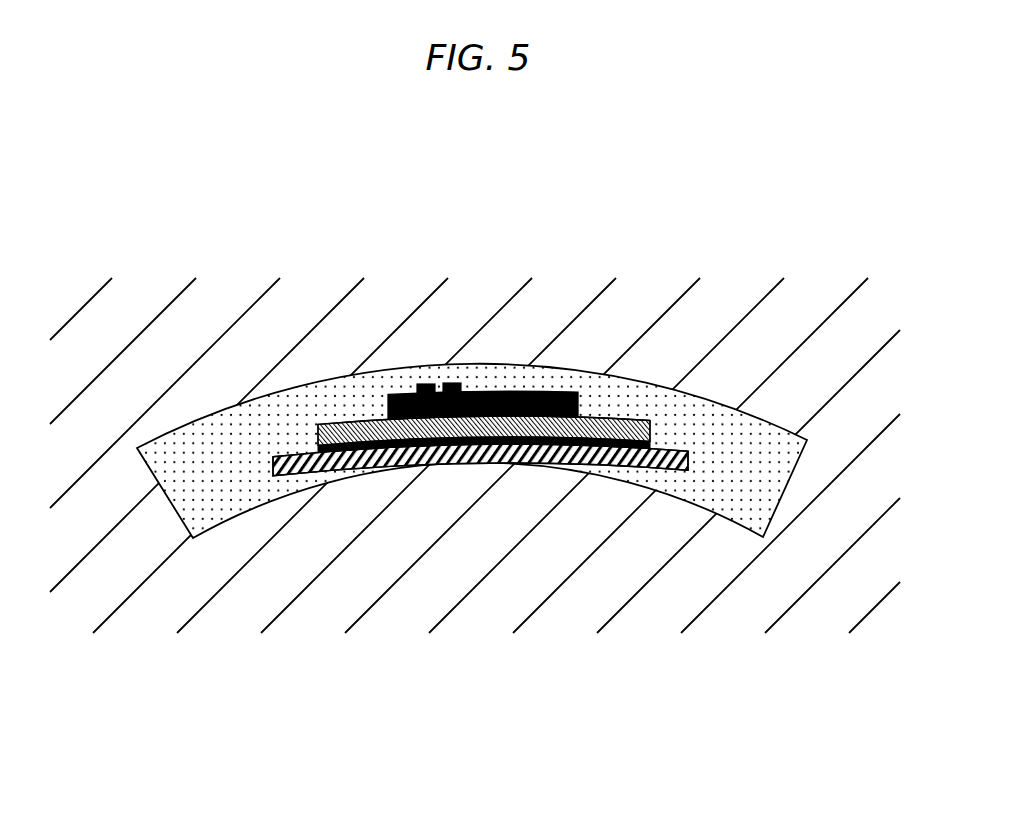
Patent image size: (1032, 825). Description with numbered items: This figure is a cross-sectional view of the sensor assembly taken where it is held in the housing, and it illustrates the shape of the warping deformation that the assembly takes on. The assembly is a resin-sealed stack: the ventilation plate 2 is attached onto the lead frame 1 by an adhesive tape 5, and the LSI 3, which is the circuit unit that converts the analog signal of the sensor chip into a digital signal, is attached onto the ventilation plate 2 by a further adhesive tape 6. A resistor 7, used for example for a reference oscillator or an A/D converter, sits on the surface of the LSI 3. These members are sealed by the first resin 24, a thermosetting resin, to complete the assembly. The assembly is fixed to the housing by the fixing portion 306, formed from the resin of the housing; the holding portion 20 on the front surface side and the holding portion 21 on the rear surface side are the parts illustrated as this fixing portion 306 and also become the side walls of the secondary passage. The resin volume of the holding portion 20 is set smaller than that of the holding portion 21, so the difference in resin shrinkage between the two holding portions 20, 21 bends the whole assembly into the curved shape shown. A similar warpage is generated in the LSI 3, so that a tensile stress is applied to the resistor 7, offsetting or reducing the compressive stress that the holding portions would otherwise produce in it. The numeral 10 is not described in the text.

The lead frame 1 is at (547, 462).
The ventilation plate 2 is at (627, 445).
The LSI (circuit unit) 3 is at (522, 392).
The adhesive tape 5 is at (650, 450).
The adhesive tape 6 is at (578, 412).
The resistor 7 is at (457, 384).
The sensor module 10 is at (287, 388).
The holding portion 20 is at (213, 303).
The holding portion 21 is at (697, 593).
The first resin 24 is at (230, 498).
The fixing portion 306 is at (800, 505).